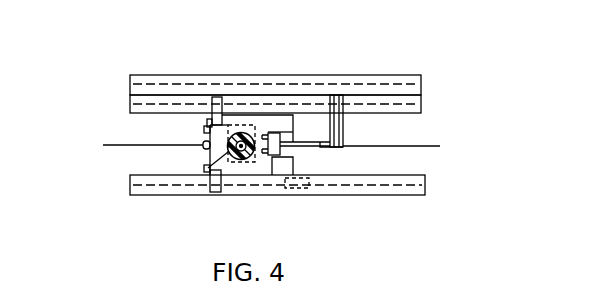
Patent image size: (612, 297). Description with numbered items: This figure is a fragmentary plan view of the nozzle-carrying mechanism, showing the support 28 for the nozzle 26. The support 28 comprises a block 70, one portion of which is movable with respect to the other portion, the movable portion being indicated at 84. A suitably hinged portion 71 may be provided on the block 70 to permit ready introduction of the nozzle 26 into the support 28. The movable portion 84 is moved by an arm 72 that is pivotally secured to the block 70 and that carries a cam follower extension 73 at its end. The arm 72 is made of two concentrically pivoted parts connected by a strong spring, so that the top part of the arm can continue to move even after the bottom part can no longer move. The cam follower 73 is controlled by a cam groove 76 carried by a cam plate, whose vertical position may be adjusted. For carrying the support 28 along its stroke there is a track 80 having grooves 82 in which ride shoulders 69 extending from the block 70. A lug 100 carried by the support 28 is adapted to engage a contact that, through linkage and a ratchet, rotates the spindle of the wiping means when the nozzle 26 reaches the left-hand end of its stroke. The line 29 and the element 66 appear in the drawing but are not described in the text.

The nozzle 26 is at (228, 140).
The support 28 is at (262, 114).
The rod 29 is at (120, 145).
The lower guide member 66 is at (220, 183).
The shoulders 69 is at (310, 179).
The block 70 is at (280, 167).
The hinged portion 71 is at (206, 157).
The arm 72 is at (323, 148).
The cam follower extension 73 is at (344, 124).
The cam groove 76 is at (421, 92).
The track 80 is at (421, 99).
The grooves 82 is at (398, 108).
The movable portion 84 is at (262, 162).
The lug 100 is at (215, 97).